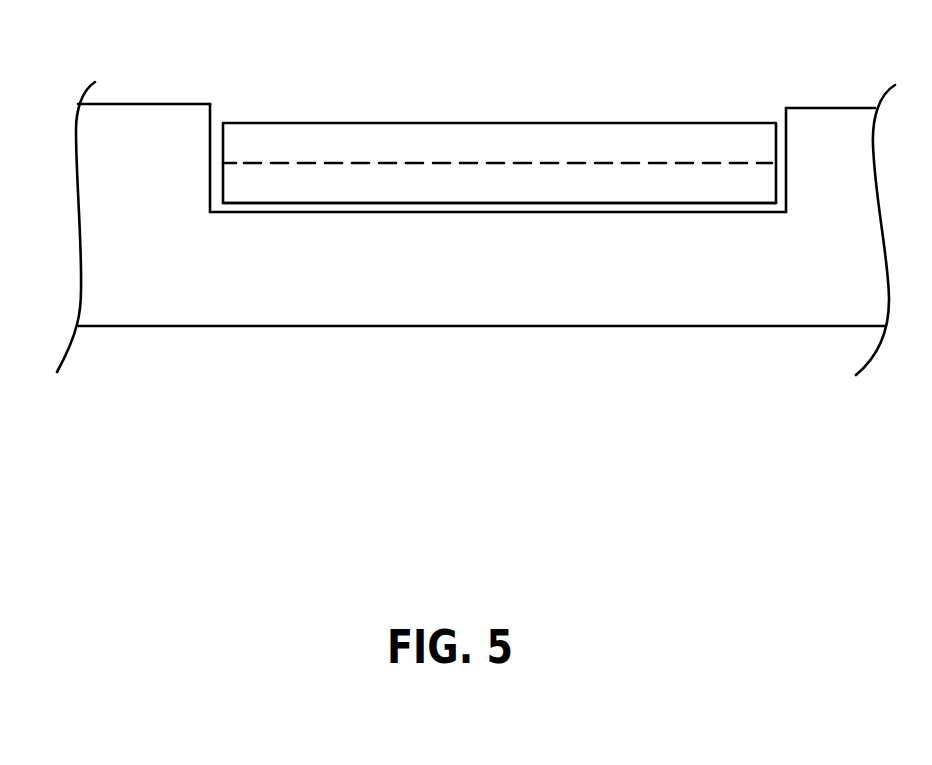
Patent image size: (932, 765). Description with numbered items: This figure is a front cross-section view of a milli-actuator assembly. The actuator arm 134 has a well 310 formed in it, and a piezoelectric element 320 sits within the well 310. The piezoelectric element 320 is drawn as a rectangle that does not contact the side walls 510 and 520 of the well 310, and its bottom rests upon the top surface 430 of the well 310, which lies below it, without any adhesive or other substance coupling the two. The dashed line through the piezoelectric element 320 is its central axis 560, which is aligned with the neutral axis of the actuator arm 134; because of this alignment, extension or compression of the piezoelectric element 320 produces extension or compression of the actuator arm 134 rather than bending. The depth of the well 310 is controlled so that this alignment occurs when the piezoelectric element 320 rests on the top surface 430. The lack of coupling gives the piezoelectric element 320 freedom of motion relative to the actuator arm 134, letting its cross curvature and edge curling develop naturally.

The actuator arm 134 is at (123, 132).
The well 310 is at (489, 207).
The piezoelectric element 320 is at (505, 150).
The top surface 430 is at (654, 214).
The side wall 510 is at (788, 172).
The side wall 520 is at (211, 177).
The central axis 560 is at (235, 163).